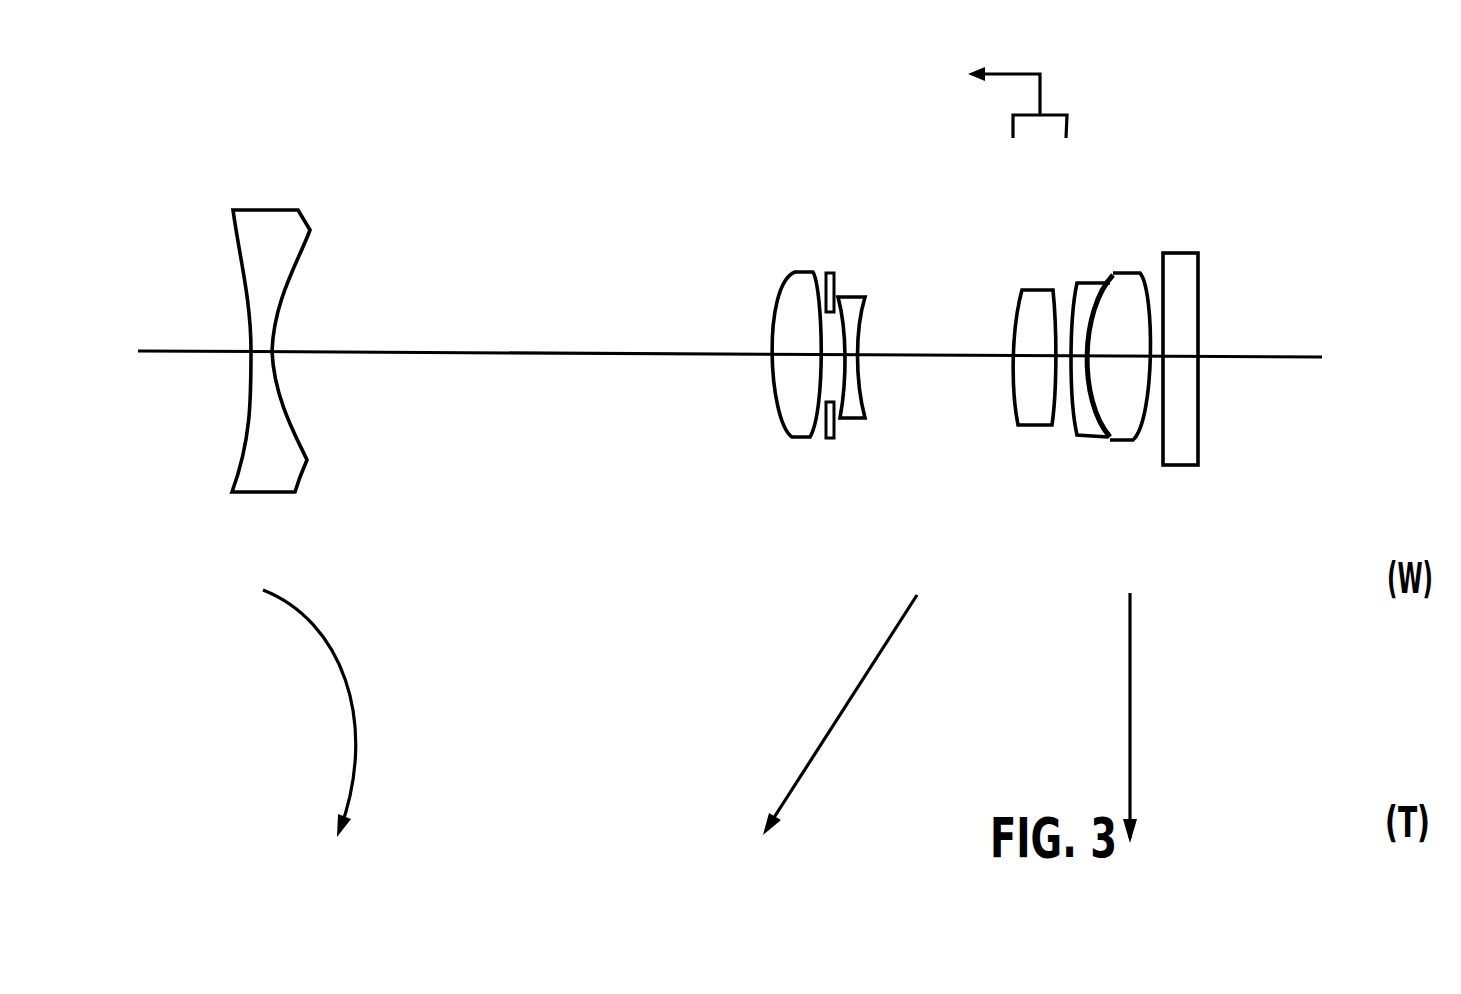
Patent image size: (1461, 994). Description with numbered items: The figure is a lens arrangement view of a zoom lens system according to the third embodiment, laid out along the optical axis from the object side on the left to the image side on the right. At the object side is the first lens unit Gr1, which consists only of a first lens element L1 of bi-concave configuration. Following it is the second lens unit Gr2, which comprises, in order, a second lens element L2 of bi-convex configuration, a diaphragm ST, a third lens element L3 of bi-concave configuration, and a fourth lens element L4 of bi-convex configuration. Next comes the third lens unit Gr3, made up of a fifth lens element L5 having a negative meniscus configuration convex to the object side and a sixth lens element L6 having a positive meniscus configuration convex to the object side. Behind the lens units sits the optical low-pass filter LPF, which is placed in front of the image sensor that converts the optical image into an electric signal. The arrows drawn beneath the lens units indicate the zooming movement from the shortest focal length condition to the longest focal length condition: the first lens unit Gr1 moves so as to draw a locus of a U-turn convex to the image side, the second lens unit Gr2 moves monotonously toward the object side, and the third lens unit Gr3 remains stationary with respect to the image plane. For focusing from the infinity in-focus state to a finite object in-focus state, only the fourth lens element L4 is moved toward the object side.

The first lens element L1 is at (258, 210).
The second lens element L2 is at (798, 287).
The diaphragm ST is at (828, 272).
The third lens element L3 is at (848, 297).
The fourth lens element L4 is at (1023, 298).
The fifth lens element L5 is at (1088, 290).
The sixth lens element L6 is at (1123, 283).
The optical low-pass filter LPF is at (1193, 283).
The first lens unit Gr1 is at (278, 468).
The second lens unit Gr2 is at (854, 444).
The third lens unit Gr3 is at (1137, 461).